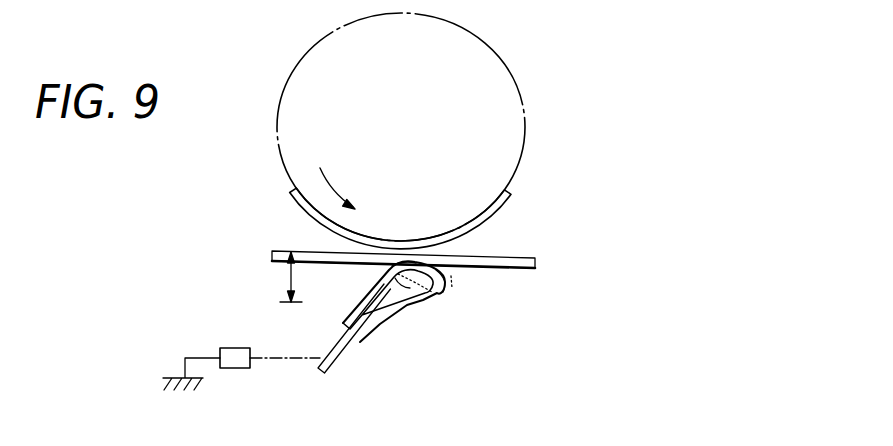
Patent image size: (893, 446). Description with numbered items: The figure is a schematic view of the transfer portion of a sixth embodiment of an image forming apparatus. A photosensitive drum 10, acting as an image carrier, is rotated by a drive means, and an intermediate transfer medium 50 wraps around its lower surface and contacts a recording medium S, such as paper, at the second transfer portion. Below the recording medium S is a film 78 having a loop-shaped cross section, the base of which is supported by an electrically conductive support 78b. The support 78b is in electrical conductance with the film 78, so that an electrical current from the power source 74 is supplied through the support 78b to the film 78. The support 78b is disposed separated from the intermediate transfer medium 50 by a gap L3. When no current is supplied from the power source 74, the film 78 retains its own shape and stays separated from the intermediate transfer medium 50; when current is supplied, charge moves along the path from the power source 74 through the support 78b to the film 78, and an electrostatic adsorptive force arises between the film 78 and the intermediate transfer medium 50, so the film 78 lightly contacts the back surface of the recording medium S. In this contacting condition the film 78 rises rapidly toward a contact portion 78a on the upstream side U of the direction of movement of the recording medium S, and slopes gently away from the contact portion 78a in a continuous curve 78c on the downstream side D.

The photosensitive drum 10 is at (483, 44).
The intermediate transfer medium 50 is at (476, 216).
The power source 74 is at (242, 348).
The film 78 is at (423, 298).
The contact portion 78a is at (403, 268).
The support 78b is at (348, 358).
The continuous curve 78c is at (452, 288).
The recording medium S is at (314, 250).
The gap L3 is at (276, 277).
The upstream side U is at (376, 270).
The downstream side D is at (462, 270).